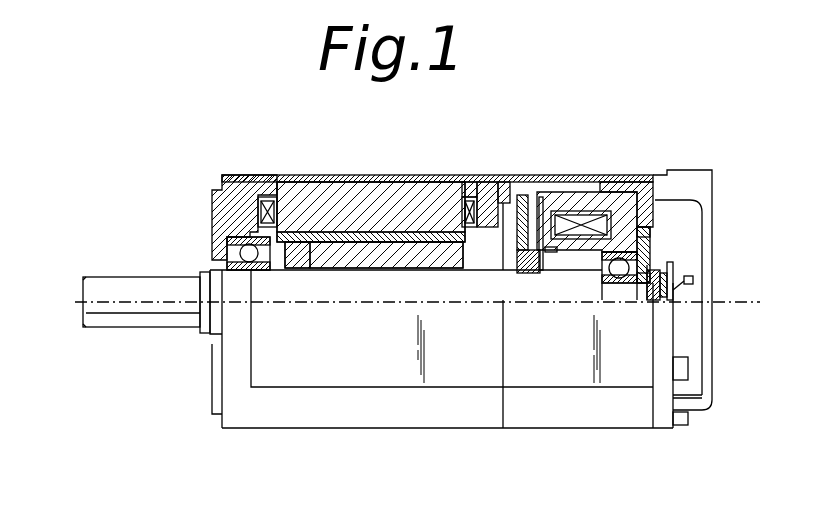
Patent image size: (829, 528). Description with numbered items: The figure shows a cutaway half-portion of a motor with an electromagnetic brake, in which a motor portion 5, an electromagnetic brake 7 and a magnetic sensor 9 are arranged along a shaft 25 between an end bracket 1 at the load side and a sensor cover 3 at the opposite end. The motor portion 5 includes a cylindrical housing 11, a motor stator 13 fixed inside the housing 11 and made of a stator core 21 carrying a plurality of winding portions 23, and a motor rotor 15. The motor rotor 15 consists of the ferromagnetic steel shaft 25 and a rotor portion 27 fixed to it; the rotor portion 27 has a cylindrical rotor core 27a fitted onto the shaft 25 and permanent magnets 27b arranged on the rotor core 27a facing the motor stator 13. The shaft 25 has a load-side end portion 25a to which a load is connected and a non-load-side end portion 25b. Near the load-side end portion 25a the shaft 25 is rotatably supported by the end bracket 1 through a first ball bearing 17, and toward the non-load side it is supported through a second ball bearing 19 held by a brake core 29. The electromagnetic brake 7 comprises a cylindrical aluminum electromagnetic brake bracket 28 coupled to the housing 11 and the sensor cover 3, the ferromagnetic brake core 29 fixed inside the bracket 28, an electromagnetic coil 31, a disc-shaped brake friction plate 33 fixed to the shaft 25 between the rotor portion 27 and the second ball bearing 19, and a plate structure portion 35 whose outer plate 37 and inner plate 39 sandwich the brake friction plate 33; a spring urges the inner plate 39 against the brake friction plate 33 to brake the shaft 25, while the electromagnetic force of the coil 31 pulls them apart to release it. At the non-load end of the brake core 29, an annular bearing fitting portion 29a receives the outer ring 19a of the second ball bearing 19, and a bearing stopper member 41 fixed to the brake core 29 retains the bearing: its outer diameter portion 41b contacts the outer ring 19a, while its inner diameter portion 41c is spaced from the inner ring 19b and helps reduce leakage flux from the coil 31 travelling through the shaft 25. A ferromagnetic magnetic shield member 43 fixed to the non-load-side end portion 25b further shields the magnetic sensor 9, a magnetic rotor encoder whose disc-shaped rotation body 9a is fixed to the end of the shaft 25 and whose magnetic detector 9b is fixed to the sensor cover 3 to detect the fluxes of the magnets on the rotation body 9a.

The end bracket 1 is at (201, 205).
The sensor cover 3 is at (719, 188).
The motor portion 5 is at (305, 188).
The electromagnetic brake 7 is at (541, 186).
The magnetic sensor 9 is at (726, 285).
The rotation body 9a is at (673, 292).
The magnetic detector 9b is at (694, 280).
The housing 11 is at (371, 180).
The motor stator 13 is at (363, 200).
The motor rotor 15 is at (293, 285).
The first ball bearing 17 is at (232, 243).
The second ball bearing 19 is at (631, 306).
The outer ring 19a is at (620, 252).
The inner ring 19b is at (625, 288).
The stator core 21 is at (383, 207).
The winding portions 23 is at (257, 197).
The shaft 25 is at (396, 373).
The load-side end portion 25a is at (123, 322).
The non-load-side end portion 25b is at (645, 300).
The rotor portion 27 is at (361, 362).
The rotor core 27a is at (327, 270).
The permanent magnets 27b is at (358, 260).
The electromagnetic brake bracket 28 is at (573, 182).
The brake core 29 is at (612, 167).
The bearing fitting portion 29a is at (645, 192).
The electromagnetic coil 31 is at (506, 299).
The brake friction plate 33 is at (519, 240).
The plate structure portion 35 is at (552, 253).
The outer plate 37 is at (517, 273).
The inner plate 39 is at (541, 272).
The bearing stopper member 41 is at (699, 232).
The outer diameter portion 41b is at (650, 222).
The inner diameter portion 41c is at (652, 250).
The magnetic shield member 43 is at (672, 298).